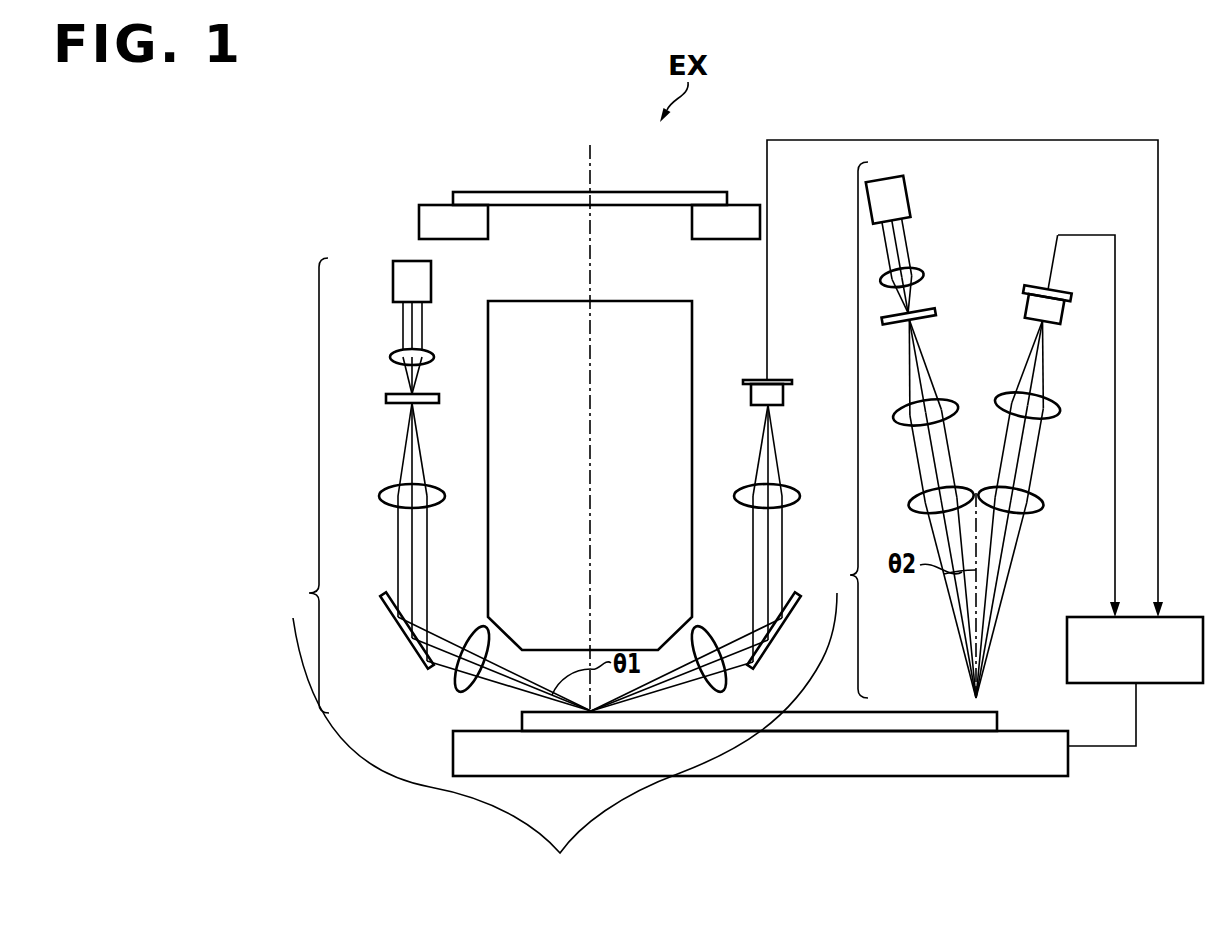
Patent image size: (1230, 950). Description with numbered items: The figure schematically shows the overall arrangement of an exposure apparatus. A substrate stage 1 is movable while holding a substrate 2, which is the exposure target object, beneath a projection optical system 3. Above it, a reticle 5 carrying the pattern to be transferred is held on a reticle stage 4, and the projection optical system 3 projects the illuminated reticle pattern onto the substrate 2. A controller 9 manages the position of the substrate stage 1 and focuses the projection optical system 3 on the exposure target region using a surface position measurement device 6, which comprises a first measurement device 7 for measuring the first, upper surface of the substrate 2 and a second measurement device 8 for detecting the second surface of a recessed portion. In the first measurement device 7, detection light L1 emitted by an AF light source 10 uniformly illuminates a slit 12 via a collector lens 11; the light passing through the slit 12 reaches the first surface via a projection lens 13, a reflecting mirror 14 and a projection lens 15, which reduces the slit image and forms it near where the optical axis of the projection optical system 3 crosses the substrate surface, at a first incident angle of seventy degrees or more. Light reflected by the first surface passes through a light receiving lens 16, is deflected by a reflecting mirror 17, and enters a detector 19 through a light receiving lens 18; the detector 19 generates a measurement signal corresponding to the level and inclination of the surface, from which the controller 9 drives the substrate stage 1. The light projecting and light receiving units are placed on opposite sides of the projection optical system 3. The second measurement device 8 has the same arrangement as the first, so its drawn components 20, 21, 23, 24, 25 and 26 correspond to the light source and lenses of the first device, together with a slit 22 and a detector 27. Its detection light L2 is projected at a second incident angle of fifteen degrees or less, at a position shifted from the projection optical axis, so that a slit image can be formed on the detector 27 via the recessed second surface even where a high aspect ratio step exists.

The substrate stage 1 is at (453, 746).
The substrate 2 is at (522, 721).
The projection optical system 3 is at (511, 301).
The reticle stage 4 is at (419, 212).
The reticle 5 is at (465, 192).
The surface position measurement device 6 is at (565, 742).
The first measurement device 7 is at (308, 485).
The second measurement device 8 is at (848, 430).
The controller 9 is at (1190, 617).
The AF light source 10 is at (393, 280).
The collector lens 11 is at (390, 356).
The slit 12 is at (386, 402).
The projection lens 13 is at (388, 488).
The reflecting mirror 14 is at (386, 596).
The projection lens 15 is at (455, 672).
The light receiving lens 16 is at (745, 665).
The reflecting mirror 17 is at (793, 594).
The light receiving lens 18 is at (742, 486).
The detector 19 is at (757, 380).
The light source of second measurement unit 20 is at (912, 196).
The condenser lens 21 is at (926, 276).
The slit 22 is at (937, 314).
The collimator lens 23 is at (947, 400).
The objective lens (illumination side) 24 is at (960, 488).
The objective lens (detection side) 25 is at (1035, 514).
The imaging lens 26 is at (1050, 420).
The detector 27 is at (1062, 318).
The detection light L1 is at (517, 683).
The detection light L2 is at (953, 600).